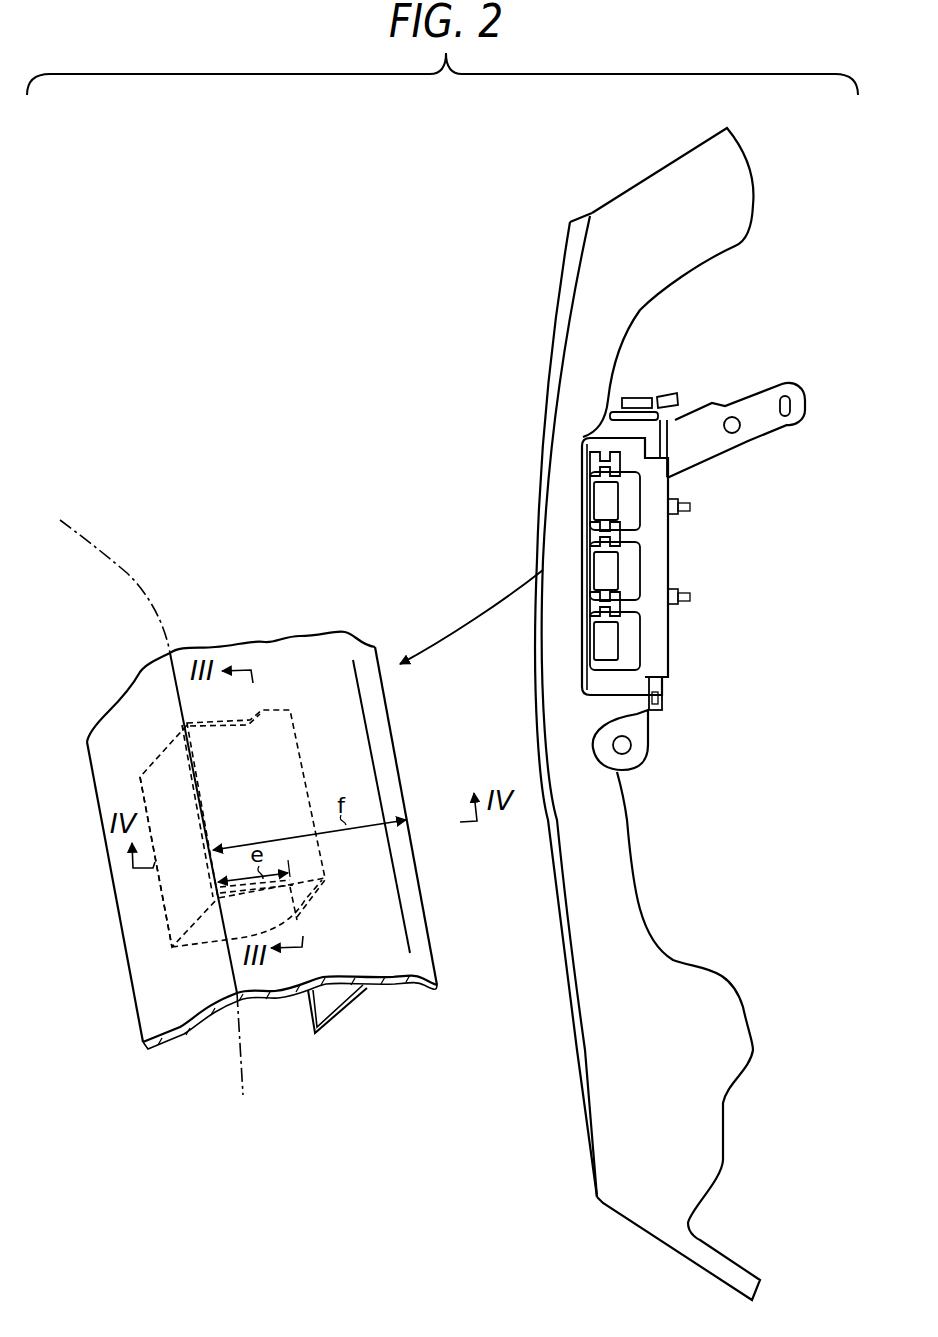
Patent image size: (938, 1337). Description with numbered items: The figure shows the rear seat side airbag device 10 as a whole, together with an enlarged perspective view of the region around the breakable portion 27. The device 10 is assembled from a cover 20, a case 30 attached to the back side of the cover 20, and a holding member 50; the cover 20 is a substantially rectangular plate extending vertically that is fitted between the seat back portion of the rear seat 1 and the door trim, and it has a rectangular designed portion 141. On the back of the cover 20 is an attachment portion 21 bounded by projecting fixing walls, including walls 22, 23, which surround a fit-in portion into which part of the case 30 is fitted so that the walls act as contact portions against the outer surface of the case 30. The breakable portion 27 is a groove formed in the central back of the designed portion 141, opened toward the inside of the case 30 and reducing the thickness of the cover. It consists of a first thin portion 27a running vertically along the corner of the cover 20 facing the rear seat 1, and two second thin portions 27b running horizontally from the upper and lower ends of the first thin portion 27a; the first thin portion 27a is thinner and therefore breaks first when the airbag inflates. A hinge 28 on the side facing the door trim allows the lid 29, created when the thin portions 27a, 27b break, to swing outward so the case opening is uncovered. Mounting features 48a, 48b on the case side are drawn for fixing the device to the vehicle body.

The rear seat 1 is at (64, 639).
The rear seat side airbag device 10 is at (810, 200).
The cover 20 is at (556, 318).
The attachment portion 21 is at (661, 690).
The wall 22 is at (143, 984).
The wall 23 is at (338, 1000).
The breakable portion 27 is at (184, 751).
The first thin portion 27a is at (203, 790).
The second thin portions 27b is at (268, 710).
The hinge 28 is at (284, 758).
The lid 29 is at (250, 757).
The case 30 is at (166, 885).
The upper bracket arm 48a is at (800, 385).
The lower bracket arm 48b is at (638, 766).
The holding member 50 is at (668, 556).
The designed portion 141 is at (351, 727).